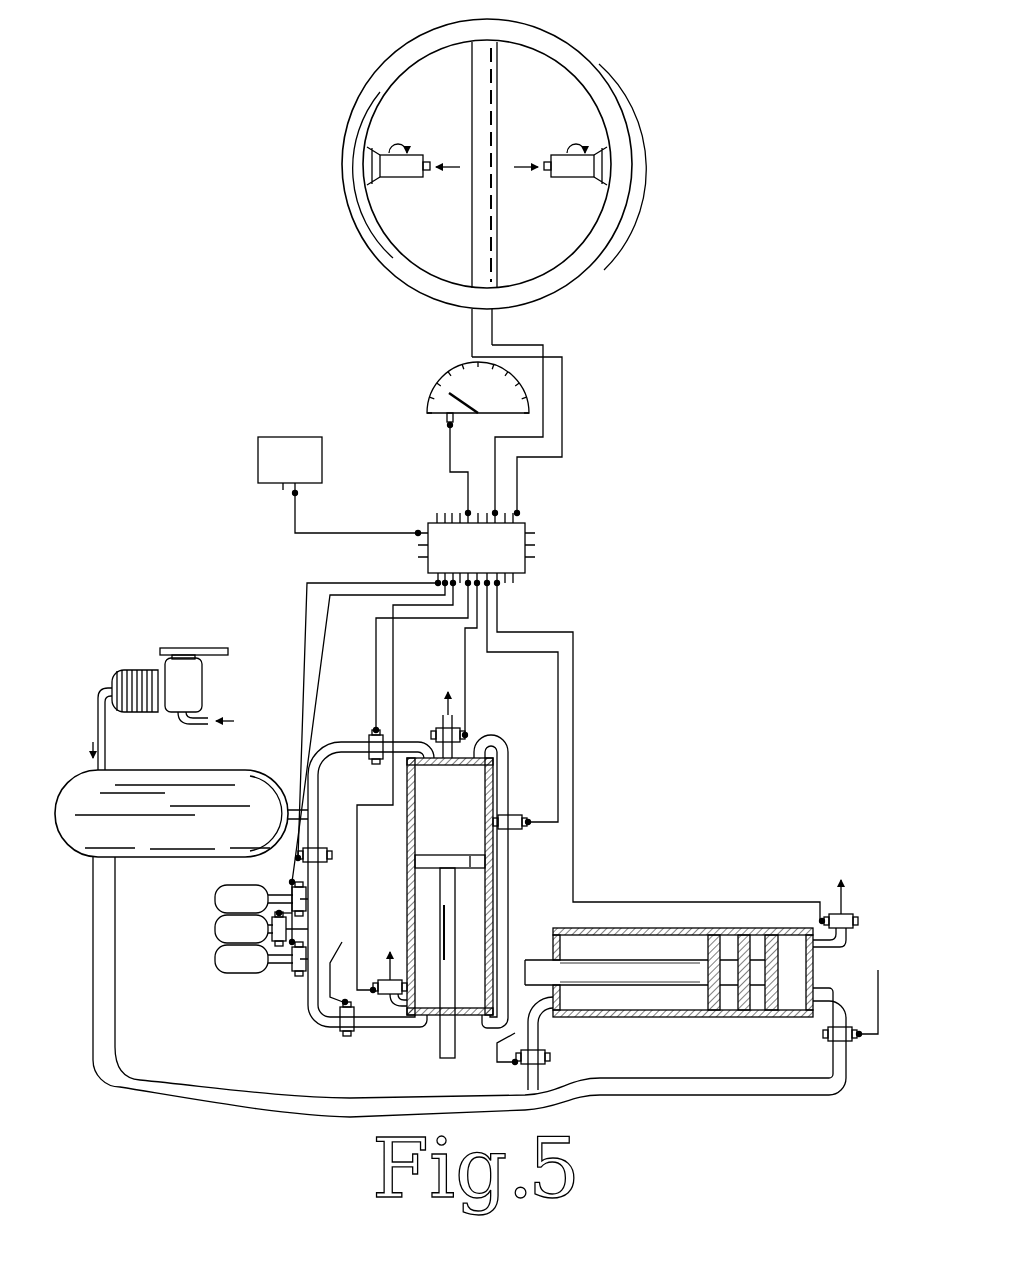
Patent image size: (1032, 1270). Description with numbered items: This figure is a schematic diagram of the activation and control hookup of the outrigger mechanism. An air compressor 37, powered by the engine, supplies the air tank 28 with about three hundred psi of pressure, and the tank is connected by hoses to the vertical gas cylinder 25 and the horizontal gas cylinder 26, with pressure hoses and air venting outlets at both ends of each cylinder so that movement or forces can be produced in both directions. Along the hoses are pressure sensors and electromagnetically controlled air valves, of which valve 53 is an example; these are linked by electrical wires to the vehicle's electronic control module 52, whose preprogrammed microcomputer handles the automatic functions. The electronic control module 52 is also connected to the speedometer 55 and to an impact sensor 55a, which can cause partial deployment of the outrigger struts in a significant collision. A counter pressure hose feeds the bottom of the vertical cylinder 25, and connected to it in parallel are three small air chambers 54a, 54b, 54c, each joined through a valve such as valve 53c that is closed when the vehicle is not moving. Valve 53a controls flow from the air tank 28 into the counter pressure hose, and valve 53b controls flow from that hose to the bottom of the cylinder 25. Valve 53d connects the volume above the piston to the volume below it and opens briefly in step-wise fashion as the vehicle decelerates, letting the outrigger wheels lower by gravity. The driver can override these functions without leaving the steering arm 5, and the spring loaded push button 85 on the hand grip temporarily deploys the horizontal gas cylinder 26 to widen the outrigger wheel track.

The steering arm 5 is at (580, 70).
The spring loaded push button 85 is at (429, 158).
The speedometer 55 is at (446, 372).
The impact sensor 55a is at (272, 445).
The electronic control module 52 is at (522, 532).
The air compressor 37 is at (192, 691).
The air tank 28 is at (86, 835).
The vertical gas cylinder 25 is at (448, 783).
The horizontal gas cylinder 26 is at (645, 943).
The electromagnetically controlled air valve 53 is at (823, 1036).
The valve 53a is at (324, 853).
The valve 53b is at (340, 1032).
The valve 53c is at (293, 973).
The valve 53d is at (513, 818).
The air chamber 54a is at (225, 963).
The air chamber 54b is at (225, 933).
The air chamber 54c is at (222, 900).